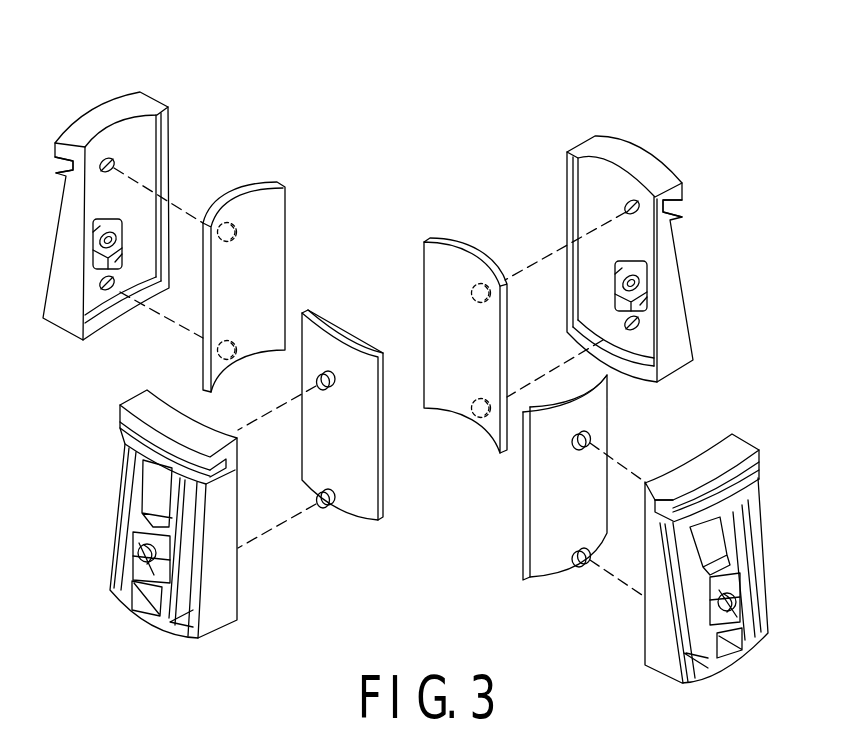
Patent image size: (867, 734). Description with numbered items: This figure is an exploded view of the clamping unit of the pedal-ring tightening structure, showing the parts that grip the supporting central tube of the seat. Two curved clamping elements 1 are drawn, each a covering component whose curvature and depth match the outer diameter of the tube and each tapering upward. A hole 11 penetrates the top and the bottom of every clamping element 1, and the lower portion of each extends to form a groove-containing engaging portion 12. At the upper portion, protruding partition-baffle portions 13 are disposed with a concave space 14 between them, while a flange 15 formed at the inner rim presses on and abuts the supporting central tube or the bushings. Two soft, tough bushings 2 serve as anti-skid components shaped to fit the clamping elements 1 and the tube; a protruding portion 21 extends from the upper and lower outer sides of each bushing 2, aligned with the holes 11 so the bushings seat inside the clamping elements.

The clamping element 1 is at (103, 112).
The bushing 2 is at (273, 218).
The hole 11 is at (114, 162).
The groove-containing engaging portion 12 is at (137, 554).
The partition-baffle portion 13 is at (138, 403).
The space 14 is at (213, 465).
The flange 15 is at (167, 182).
The protruding portion 21 is at (322, 372).